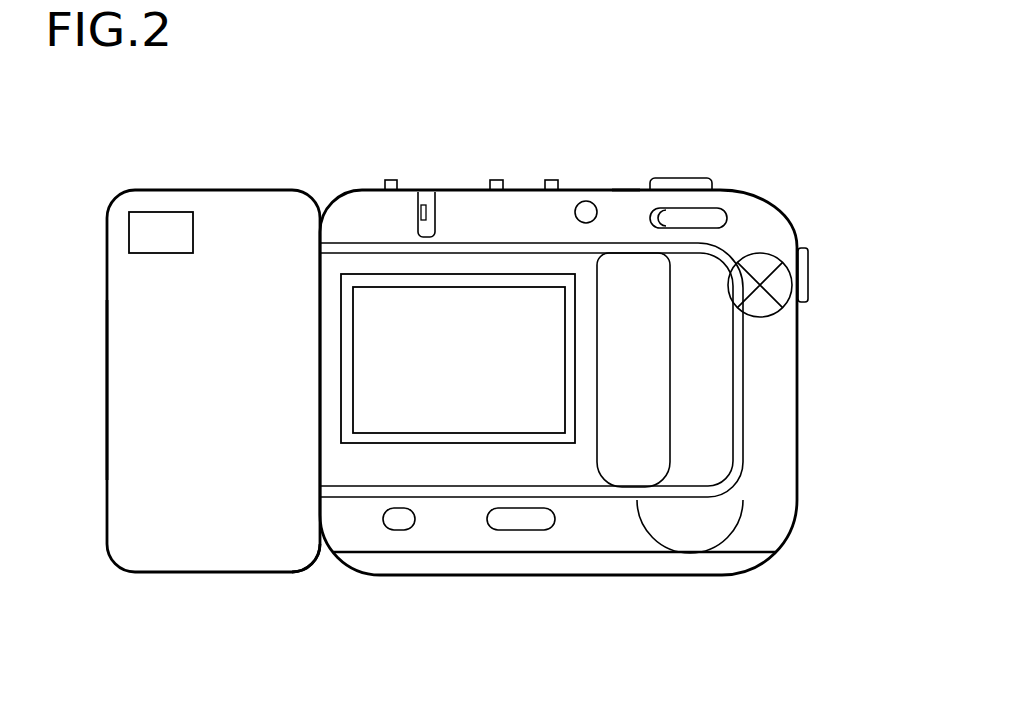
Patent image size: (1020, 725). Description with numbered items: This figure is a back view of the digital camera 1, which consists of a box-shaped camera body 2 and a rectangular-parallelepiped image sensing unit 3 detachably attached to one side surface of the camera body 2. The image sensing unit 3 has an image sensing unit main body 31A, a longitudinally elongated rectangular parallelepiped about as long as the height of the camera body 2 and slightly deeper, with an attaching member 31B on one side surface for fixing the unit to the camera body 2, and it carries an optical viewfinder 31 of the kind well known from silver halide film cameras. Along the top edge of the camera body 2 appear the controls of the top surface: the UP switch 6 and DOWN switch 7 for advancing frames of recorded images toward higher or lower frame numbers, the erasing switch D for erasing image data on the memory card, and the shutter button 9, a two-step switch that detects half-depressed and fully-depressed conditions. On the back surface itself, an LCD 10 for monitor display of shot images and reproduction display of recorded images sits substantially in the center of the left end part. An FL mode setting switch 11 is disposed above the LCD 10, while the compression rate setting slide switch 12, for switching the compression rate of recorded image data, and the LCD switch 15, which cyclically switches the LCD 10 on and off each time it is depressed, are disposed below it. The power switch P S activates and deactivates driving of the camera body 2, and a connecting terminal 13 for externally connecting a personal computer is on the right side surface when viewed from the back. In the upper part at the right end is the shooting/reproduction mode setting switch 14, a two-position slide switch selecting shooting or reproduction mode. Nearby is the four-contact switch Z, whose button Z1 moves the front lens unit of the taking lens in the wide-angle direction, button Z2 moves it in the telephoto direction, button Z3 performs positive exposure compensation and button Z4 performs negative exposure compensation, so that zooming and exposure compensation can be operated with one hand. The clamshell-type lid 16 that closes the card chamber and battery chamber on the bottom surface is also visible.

The digital camera 1 is at (430, 98).
The camera body 2 is at (323, 148).
The image sensing unit 3 is at (315, 134).
The UP switch 6 is at (552, 178).
The DOWN switch 7 is at (497, 178).
The shutter button 9 is at (683, 178).
The LCD 10 is at (495, 420).
The FL mode setting switch 11 is at (420, 212).
The compression rate setting slide switch 12 is at (383, 518).
The connecting terminal 13 is at (808, 272).
The shooting/reproduction mode setting switch 14 is at (673, 225).
The LCD switch 15 is at (515, 522).
The clamshell-type lid 16 is at (680, 562).
The optical viewfinder 31 is at (163, 251).
The image sensing unit main body 31A is at (121, 393).
The attaching member 31B is at (312, 553).
The erasing switch D is at (390, 178).
The power switch P is at (592, 200).
The power switch S is at (626, 167).
The four-contact switch Z is at (775, 255).
The button Z1 is at (732, 287).
The button Z2 is at (782, 305).
The button Z3 is at (755, 262).
The button Z4 is at (762, 312).